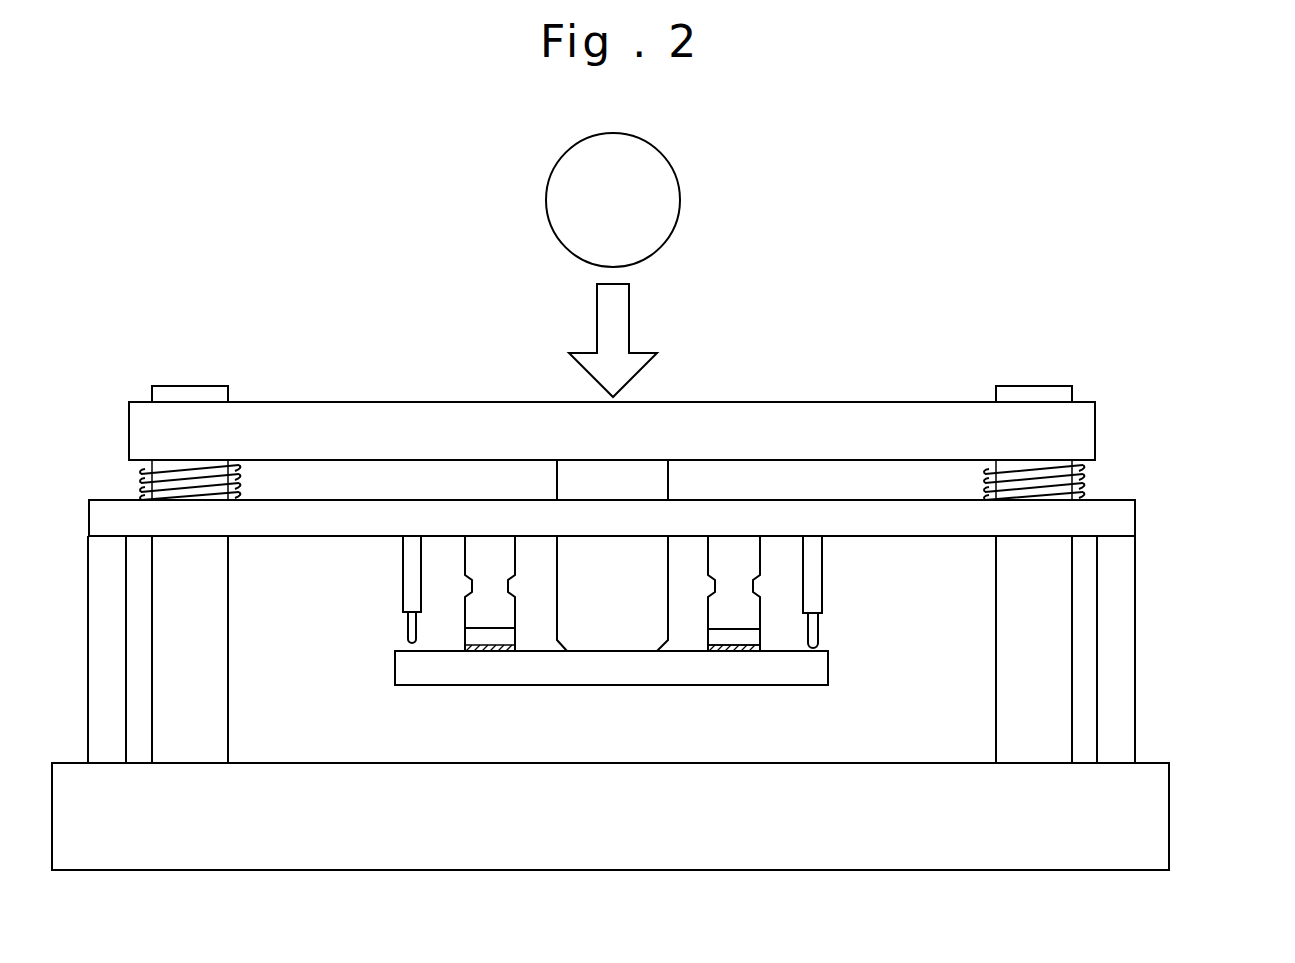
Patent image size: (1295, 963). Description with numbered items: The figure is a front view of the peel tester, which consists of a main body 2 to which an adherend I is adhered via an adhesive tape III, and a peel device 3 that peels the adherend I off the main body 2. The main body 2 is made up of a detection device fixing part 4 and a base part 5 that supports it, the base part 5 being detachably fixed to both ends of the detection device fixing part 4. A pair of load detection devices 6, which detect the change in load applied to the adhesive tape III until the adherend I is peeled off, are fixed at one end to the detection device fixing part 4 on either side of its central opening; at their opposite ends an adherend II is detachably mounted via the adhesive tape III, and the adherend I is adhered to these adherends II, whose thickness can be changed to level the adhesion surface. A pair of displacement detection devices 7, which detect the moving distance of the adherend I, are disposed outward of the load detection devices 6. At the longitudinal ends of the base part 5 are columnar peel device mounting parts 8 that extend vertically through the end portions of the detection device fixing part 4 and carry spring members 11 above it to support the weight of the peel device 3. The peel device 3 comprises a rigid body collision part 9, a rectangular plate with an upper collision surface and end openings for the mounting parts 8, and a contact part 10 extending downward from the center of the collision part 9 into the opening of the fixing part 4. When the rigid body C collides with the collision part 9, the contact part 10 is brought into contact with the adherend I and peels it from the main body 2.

The main body 2 is at (667, 685).
The peel device 3 is at (612, 460).
The detection device fixing part 4 is at (1122, 523).
The base part 5 is at (1253, 558).
The load detection devices 6 is at (748, 558).
The displacement detection devices 7 is at (813, 585).
The peel device mounting parts 8 is at (1032, 395).
The rigid body collision part 9 is at (523, 432).
The contact part 10 is at (585, 585).
The spring members 11 is at (140, 478).
The rigid body C is at (652, 203).
The adherend I is at (410, 668).
The adherend II is at (702, 638).
The adhesive tape III is at (735, 651).